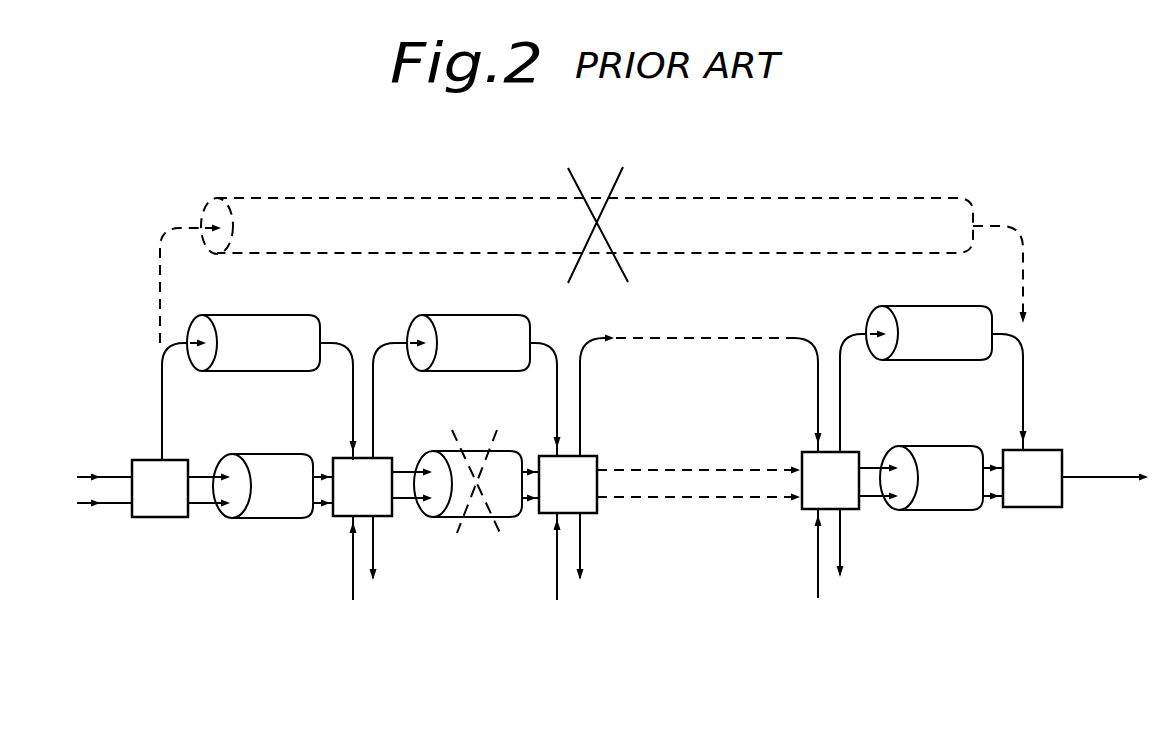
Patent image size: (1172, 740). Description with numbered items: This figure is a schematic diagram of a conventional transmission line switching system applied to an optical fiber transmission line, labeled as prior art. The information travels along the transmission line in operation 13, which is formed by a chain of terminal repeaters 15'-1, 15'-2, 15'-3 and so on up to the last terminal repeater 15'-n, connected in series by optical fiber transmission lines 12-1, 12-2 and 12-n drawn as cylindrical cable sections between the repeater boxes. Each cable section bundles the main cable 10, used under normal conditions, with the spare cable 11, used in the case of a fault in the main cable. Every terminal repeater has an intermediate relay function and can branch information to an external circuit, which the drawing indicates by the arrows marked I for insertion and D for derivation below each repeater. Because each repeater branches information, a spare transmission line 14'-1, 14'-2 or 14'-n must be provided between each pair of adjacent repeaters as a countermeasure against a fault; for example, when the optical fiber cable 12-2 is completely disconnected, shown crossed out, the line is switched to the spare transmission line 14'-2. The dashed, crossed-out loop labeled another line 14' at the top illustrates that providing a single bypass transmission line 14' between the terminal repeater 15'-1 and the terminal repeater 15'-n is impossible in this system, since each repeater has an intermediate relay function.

The main cable 10 is at (207, 506).
The spare cable 11 is at (202, 470).
The optical fiber transmission line 12-1 is at (275, 518).
The optical fiber transmission line 12-2 is at (480, 518).
The optical fiber transmission line 12-n is at (925, 510).
The transmission line in operation 13 is at (586, 632).
The another transmission line 14' is at (593, 236).
The spare transmission line 14'-1 is at (259, 366).
The spare transmission line 14'-2 is at (467, 365).
The spare transmission line 14'-n is at (933, 360).
The terminal repeater 15'-1 is at (151, 519).
The terminal repeater 15'-2 is at (392, 534).
The terminal repeater 15'-3 is at (598, 533).
The terminal repeater 15'-n is at (1039, 512).